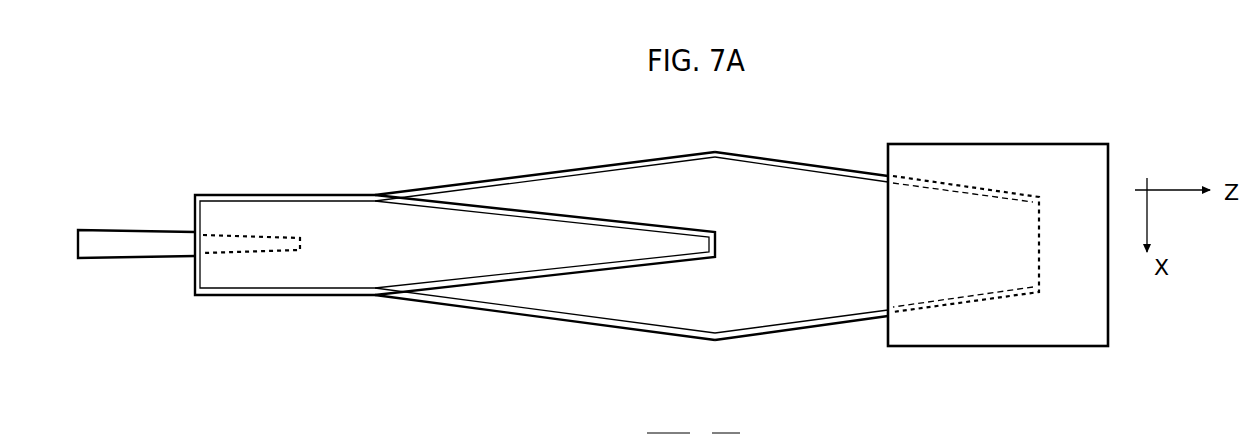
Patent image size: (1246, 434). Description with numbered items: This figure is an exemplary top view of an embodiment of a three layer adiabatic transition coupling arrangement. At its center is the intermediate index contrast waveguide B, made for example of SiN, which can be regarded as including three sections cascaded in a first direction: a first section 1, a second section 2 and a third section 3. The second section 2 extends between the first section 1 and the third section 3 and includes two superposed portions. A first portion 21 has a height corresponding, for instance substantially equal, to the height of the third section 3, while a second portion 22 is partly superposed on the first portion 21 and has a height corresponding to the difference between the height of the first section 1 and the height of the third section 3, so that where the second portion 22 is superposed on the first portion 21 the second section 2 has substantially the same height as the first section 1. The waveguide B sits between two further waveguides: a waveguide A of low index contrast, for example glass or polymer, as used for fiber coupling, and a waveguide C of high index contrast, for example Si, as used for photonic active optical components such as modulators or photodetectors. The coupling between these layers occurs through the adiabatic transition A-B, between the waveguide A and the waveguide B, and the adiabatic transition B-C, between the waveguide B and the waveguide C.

The first section 1 is at (299, 186).
The second section 2 is at (565, 156).
The first portion 21 is at (587, 298).
The second portion 22 is at (437, 237).
The third section 3 is at (867, 158).
The waveguide A is at (1045, 158).
The waveguide B is at (719, 150).
The waveguide C is at (95, 253).
The adiabatic transition A-B is at (954, 310).
The adiabatic transition B-C is at (287, 264).